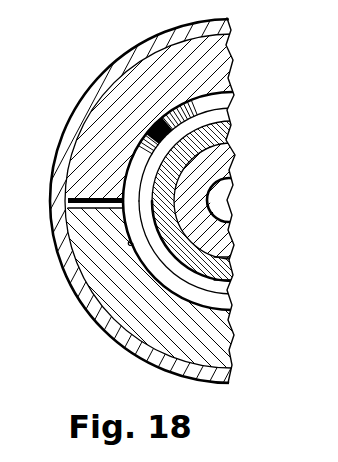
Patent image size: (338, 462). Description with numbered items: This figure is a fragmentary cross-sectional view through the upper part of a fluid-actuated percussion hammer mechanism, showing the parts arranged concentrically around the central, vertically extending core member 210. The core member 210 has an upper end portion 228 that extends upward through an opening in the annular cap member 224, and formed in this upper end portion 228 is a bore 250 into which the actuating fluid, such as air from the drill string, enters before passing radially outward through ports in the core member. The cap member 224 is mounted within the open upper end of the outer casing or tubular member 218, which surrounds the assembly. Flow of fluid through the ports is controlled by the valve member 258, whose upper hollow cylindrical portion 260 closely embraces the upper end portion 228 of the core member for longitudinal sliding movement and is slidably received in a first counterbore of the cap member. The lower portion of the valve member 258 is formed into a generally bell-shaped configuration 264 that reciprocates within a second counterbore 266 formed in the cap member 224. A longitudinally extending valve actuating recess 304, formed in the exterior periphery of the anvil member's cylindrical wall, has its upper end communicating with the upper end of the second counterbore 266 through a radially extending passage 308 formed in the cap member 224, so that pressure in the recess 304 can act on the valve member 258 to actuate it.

The core member 210 is at (237, 165).
The outer casing or tubular member 218 is at (68, 117).
The annular cap member 224 is at (123, 310).
The upper end portion of the core member 228 is at (234, 148).
The bore 250 is at (227, 222).
The valve member 258 is at (233, 113).
The upper hollow cylindrical portion of the valve member 260 is at (217, 277).
The bell-shaped configuration of the valve member 264 is at (133, 78).
The second counterbore 266 is at (131, 246).
The valve actuating recess 304 is at (69, 205).
The radially extending passage 308 is at (68, 200).